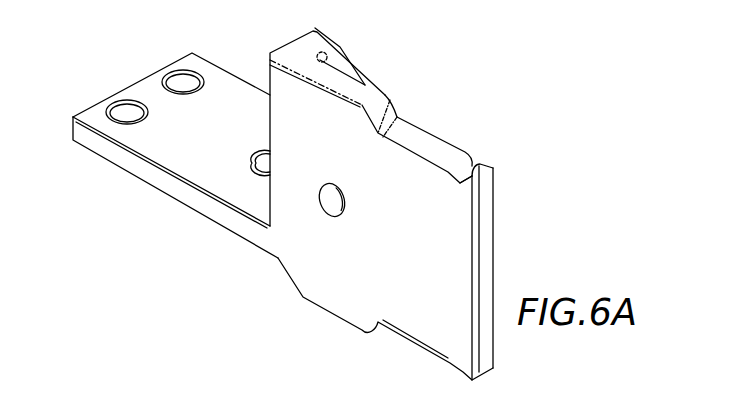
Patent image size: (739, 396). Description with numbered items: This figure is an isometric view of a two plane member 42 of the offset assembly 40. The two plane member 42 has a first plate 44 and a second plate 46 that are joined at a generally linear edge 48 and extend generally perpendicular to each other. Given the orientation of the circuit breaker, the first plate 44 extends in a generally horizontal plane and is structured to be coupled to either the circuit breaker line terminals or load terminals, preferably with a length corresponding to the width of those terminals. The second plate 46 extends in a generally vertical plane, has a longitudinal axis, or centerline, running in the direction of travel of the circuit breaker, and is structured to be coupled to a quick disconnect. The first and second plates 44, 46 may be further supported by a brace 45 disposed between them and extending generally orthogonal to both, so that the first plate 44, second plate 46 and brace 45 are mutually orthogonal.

The offset assembly 40 is at (128, 66).
The two plane member 42 is at (290, 199).
The first plate 44 is at (227, 90).
The brace 45 is at (342, 63).
The second plate 46 is at (423, 172).
The linear edge 48 is at (270, 122).